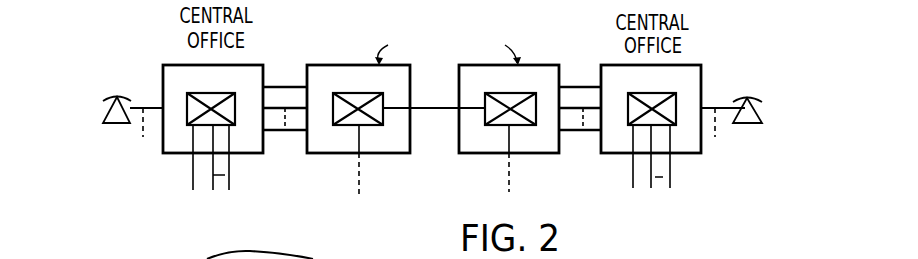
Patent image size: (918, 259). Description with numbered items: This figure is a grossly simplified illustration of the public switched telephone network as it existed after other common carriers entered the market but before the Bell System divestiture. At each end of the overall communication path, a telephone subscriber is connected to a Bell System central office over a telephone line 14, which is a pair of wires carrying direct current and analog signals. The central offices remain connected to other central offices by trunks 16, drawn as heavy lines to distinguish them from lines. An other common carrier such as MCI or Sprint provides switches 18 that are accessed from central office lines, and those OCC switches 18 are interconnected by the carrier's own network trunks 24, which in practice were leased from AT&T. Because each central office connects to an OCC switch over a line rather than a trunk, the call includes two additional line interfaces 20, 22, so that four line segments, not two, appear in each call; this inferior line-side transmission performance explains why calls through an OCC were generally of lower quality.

The telephone lines 14 is at (158, 108).
The trunks 16 is at (193, 175).
The OCC switches 18 is at (319, 65).
The line interface 20 is at (293, 133).
The line interface 22 is at (583, 133).
The network trunks 24 is at (447, 110).